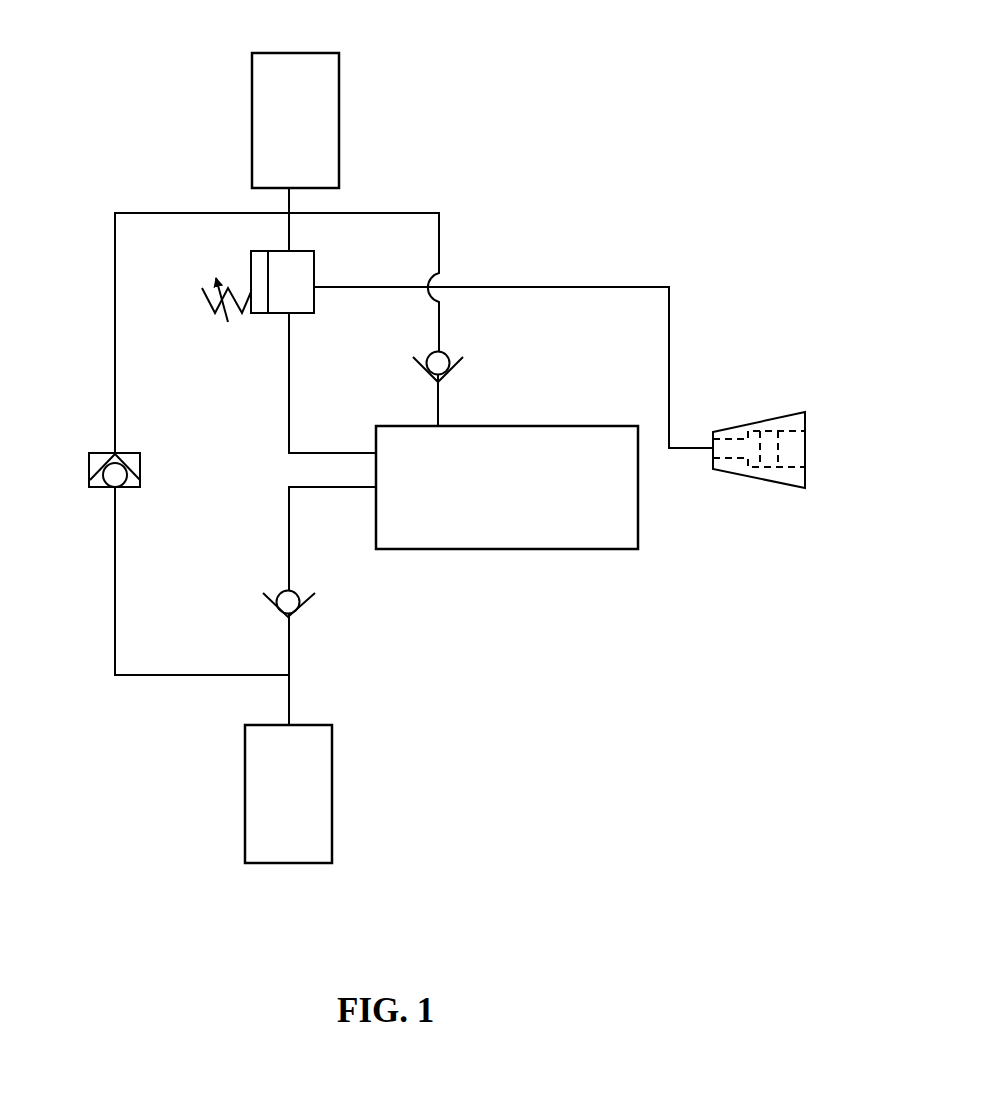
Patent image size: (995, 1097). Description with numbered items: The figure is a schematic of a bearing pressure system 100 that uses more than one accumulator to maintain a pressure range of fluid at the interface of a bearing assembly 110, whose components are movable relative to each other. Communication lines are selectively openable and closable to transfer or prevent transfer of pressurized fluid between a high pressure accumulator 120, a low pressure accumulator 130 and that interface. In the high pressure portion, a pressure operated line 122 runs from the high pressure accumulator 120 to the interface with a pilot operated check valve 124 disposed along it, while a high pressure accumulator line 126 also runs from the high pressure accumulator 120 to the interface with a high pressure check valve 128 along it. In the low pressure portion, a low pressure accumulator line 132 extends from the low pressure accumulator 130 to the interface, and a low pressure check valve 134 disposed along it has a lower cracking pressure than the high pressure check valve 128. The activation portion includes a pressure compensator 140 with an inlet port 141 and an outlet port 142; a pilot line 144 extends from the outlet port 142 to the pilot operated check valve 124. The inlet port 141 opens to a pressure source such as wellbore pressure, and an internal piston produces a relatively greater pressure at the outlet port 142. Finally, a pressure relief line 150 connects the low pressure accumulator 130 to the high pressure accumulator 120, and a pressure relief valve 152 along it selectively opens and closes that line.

The bearing pressure system 100 is at (663, 68).
The bearing assembly 110 is at (507, 487).
The high pressure accumulator 120 is at (295, 120).
The pressure operated line 122 is at (288, 373).
The pilot operated check valve 124 is at (251, 260).
The high pressure accumulator line 126 is at (438, 213).
The high pressure check valve 128 is at (445, 352).
The low pressure accumulator 130 is at (288, 794).
The low pressure accumulator line 132 is at (289, 653).
The low pressure check valve 134 is at (280, 587).
The pressure compensator 140 is at (740, 475).
The inlet port 141 is at (812, 450).
The outlet port 142 is at (708, 441).
The pilot line 144 is at (645, 287).
The pressure relief line 150 is at (128, 212).
The pressure relief valve 152 is at (89, 470).